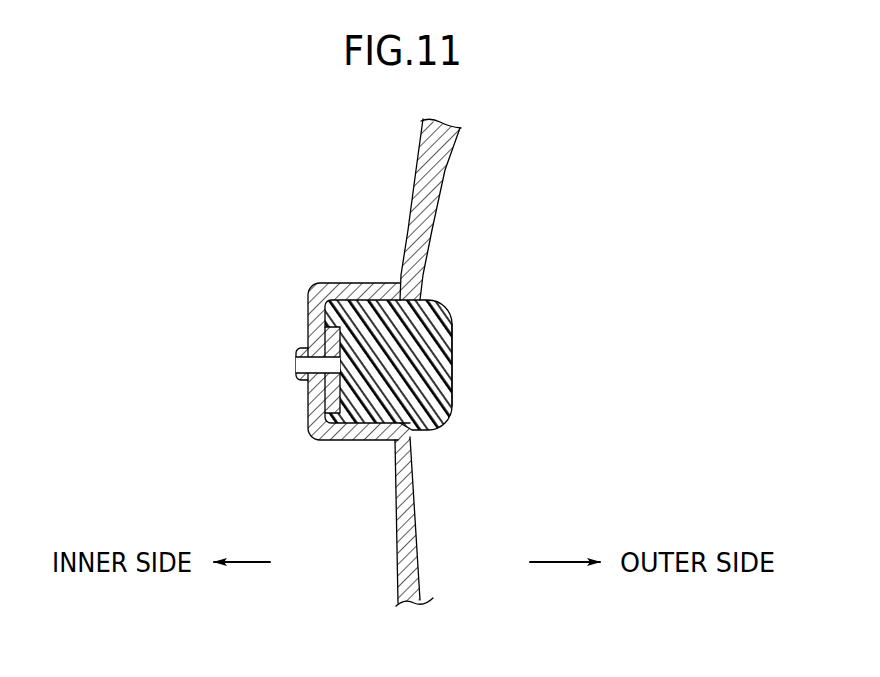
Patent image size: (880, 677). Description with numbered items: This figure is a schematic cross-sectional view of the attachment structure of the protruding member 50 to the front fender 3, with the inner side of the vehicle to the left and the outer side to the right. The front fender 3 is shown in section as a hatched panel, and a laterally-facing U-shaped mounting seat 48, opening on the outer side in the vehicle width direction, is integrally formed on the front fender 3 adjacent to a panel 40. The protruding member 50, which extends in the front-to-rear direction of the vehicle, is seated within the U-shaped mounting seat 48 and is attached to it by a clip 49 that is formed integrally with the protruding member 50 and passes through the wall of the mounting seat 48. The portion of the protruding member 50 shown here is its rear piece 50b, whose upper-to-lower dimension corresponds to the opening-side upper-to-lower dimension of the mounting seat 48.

The front fender 3 is at (445, 166).
The panel 40 is at (412, 478).
The mounting seat 48 is at (347, 282).
The clip 49 is at (297, 357).
The protruding member 50 is at (445, 294).
The rear piece 50b is at (453, 337).